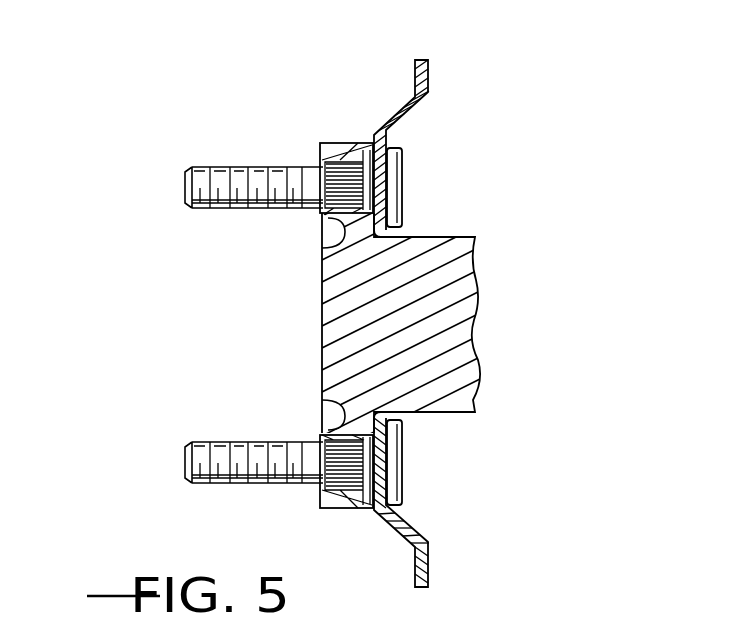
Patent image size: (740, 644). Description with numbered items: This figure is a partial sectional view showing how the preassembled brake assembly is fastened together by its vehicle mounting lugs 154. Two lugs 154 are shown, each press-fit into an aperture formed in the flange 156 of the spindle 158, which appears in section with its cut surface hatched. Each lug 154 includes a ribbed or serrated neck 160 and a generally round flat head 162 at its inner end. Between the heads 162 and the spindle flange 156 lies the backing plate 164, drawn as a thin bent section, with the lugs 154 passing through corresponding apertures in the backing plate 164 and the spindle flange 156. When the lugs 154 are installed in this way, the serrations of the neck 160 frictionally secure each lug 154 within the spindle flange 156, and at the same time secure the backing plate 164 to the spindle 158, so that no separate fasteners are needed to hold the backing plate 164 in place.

The vehicle mounting lug 154 is at (247, 167).
The flange 156 is at (343, 143).
The spindle 158 is at (462, 237).
The ribbed or serrated neck 160 is at (328, 238).
The generally round flat head 162 is at (403, 183).
The backing plate 164 is at (415, 74).